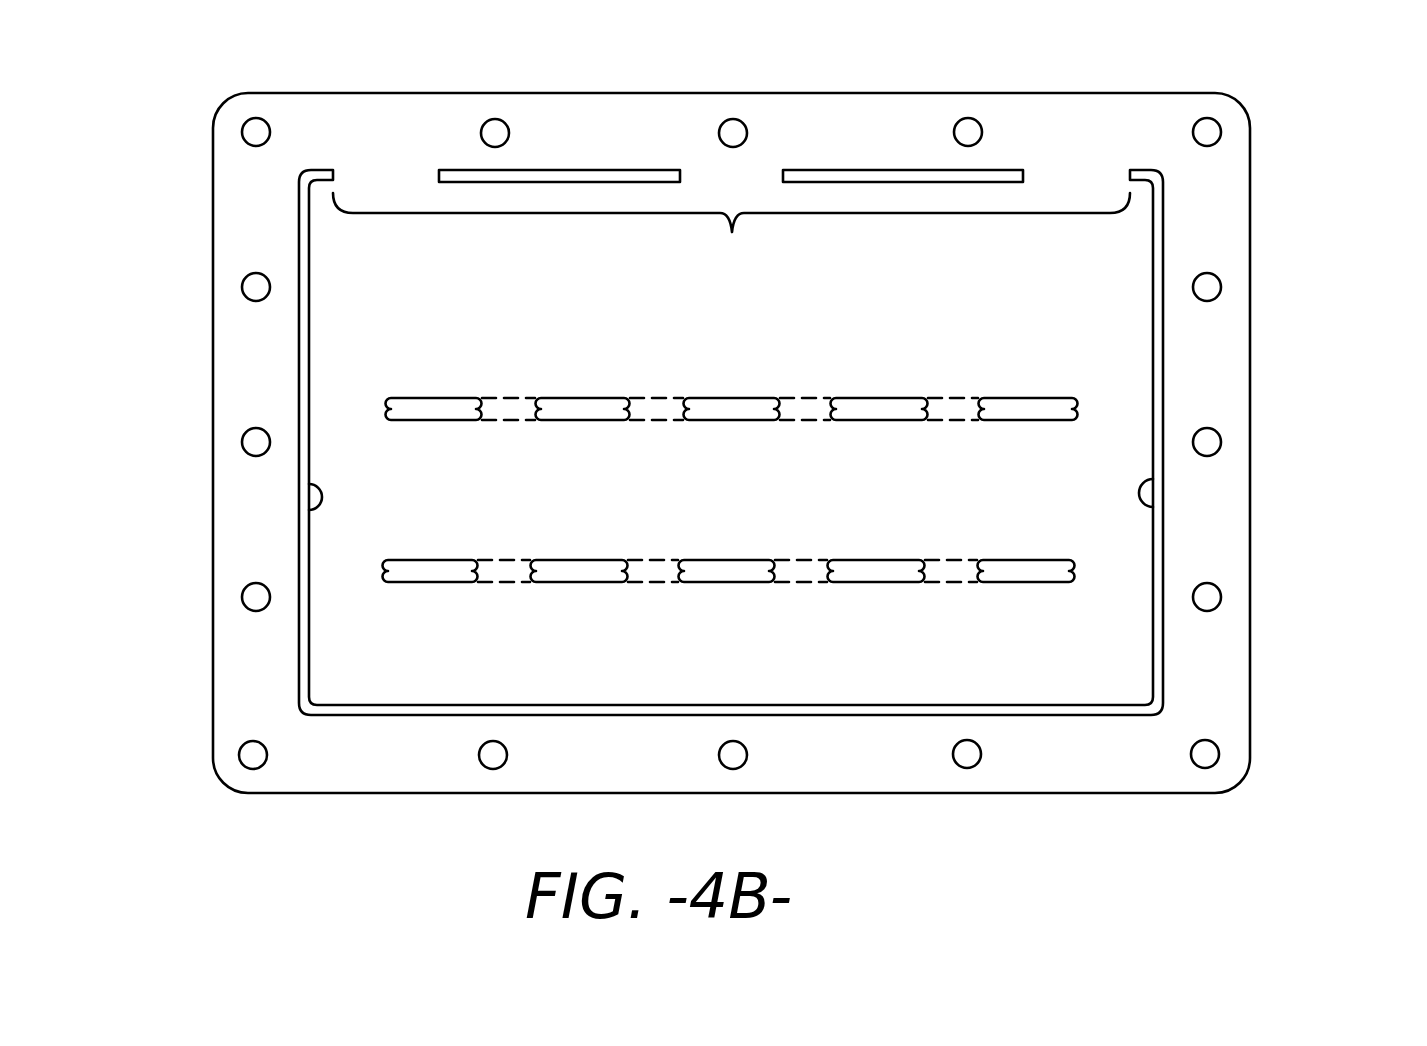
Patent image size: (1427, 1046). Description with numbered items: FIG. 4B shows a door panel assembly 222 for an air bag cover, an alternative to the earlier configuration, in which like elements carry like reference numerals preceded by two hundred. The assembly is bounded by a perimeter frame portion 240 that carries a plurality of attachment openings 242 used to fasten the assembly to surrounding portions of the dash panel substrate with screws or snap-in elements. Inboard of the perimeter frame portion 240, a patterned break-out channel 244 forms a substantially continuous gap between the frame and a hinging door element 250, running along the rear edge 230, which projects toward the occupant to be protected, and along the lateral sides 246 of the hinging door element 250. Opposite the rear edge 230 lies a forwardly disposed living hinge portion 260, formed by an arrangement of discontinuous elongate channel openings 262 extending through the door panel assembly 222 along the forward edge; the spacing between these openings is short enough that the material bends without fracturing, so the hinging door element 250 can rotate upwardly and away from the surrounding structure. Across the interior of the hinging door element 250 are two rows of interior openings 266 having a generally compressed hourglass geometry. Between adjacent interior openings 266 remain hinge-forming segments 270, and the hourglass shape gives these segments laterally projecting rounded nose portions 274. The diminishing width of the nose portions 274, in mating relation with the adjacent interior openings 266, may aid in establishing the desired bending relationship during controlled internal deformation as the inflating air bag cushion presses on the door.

The door panel assembly 222 is at (1300, 157).
The rear edge 230 is at (1033, 703).
The perimeter frame portion 240 is at (1192, 793).
The attachment openings 242 is at (1208, 427).
The break-out channel 244 is at (831, 442).
The lateral sides 246 is at (310, 513).
The hinging door element 250 is at (1118, 267).
The living hinge portion 260 is at (731, 159).
The elongate channel openings 262 is at (607, 170).
The interior openings 266 is at (435, 398).
The hinge-forming segments 270 is at (510, 397).
The rounded nose portions 274 is at (488, 412).